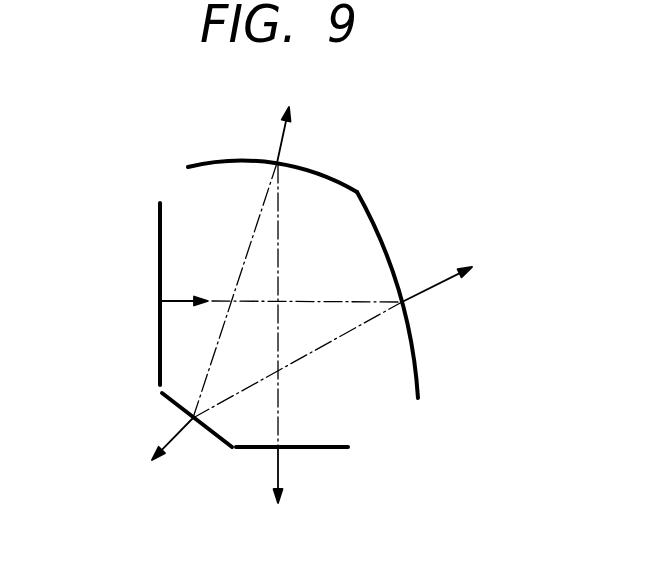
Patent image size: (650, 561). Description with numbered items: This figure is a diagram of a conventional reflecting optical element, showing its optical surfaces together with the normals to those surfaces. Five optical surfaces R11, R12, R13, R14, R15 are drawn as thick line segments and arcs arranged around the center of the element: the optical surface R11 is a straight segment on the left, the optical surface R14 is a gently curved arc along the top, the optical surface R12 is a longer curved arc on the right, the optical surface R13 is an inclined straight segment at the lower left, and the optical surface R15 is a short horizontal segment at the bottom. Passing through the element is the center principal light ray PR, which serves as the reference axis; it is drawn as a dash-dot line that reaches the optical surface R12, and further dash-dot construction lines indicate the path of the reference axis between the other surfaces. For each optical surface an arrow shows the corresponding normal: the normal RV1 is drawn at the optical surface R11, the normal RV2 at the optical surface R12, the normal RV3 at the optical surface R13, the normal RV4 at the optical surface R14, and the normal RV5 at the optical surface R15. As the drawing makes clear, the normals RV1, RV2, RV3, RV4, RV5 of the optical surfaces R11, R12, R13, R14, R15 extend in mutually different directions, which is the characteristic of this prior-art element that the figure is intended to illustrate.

The optical surface R11 is at (160, 337).
The optical surface R12 is at (375, 217).
The optical surface R13 is at (213, 438).
The optical surface R14 is at (218, 162).
The optical surface R15 is at (257, 449).
The normal RV1 is at (182, 300).
The normal RV2 is at (430, 290).
The normal RV3 is at (171, 438).
The normal RV4 is at (283, 136).
The normal RV5 is at (283, 470).
The center principal light ray PR is at (315, 352).